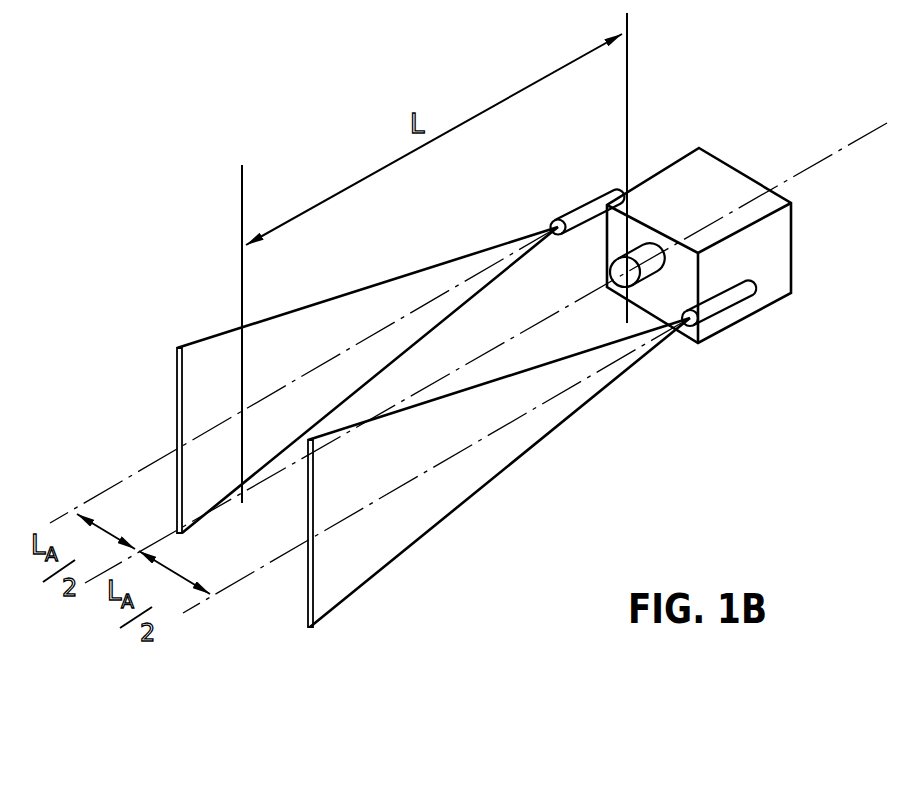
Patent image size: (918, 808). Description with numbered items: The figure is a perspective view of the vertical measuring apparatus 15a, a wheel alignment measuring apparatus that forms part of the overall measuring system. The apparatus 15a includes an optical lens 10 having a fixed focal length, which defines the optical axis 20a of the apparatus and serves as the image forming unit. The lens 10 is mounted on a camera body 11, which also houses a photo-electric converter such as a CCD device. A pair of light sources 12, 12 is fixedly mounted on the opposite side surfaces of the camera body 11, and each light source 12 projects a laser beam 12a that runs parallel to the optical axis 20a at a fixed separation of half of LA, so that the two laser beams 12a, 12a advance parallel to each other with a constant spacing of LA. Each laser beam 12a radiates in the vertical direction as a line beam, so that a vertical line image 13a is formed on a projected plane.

The optical lens 10 is at (610, 296).
The camera body 11 is at (732, 185).
The light source 12 is at (580, 213).
The laser beam 12a is at (373, 284).
The vertical line image 13a is at (177, 407).
The vertical measuring apparatus 15a is at (791, 150).
The optical axis 20a is at (842, 150).